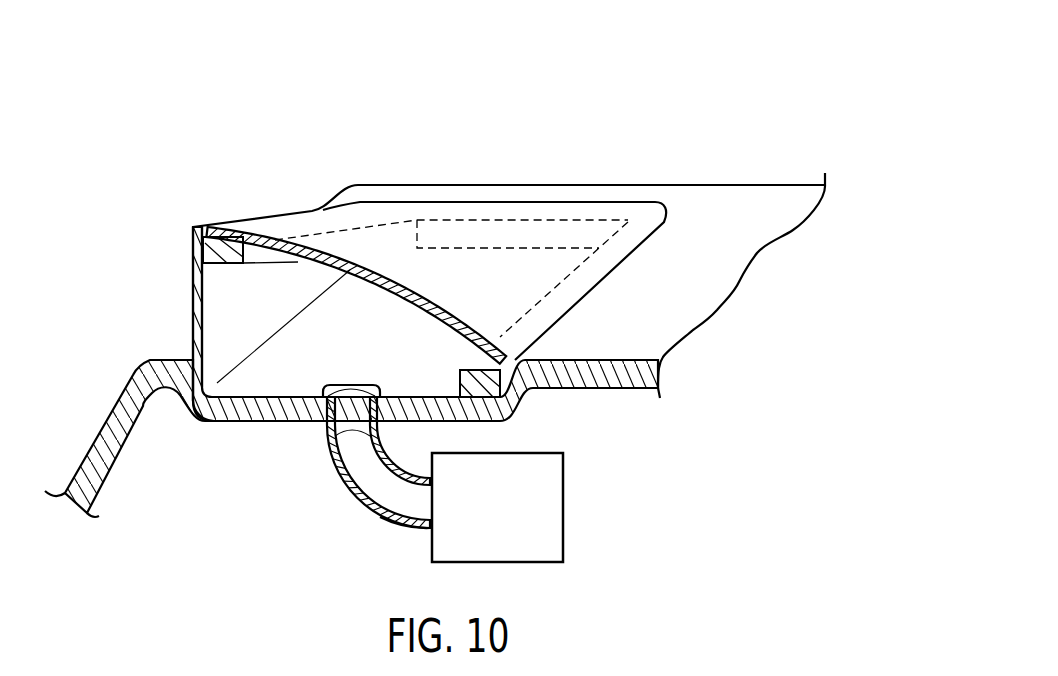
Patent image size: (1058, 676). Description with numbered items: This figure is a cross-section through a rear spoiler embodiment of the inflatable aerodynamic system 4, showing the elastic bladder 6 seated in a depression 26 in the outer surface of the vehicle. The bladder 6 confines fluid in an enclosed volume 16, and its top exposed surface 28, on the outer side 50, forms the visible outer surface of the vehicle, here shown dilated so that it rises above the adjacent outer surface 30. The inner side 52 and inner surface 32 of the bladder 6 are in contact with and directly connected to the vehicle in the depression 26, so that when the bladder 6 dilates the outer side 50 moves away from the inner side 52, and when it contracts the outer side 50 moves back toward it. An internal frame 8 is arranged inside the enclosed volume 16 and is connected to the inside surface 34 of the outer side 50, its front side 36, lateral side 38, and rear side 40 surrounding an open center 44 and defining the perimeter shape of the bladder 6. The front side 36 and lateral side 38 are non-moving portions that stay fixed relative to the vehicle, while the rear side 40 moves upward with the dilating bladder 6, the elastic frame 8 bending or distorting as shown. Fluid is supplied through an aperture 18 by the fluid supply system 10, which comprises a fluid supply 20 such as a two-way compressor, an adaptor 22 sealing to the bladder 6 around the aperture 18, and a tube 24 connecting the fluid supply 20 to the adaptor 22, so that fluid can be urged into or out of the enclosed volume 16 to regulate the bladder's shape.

The inflatable aerodynamic system 4 is at (104, 212).
The elastic bladder 6 is at (345, 196).
The internal frame 8 is at (289, 266).
The fluid supply system 10 is at (306, 549).
The enclosed volume 16 is at (364, 331).
The aperture 18 is at (338, 400).
The fluid supply 20 is at (509, 522).
The adaptor 22 is at (333, 434).
The tube 24 is at (379, 517).
The depression 26 is at (298, 392).
The exposed surface 28 is at (547, 272).
The adjacent outer surface 30 is at (714, 208).
The inner surface 32 is at (230, 420).
The inside surface 34 is at (263, 357).
The front side 36 is at (482, 366).
The lateral side 38 is at (545, 230).
The rear side 40 is at (226, 232).
The open center 44 is at (464, 265).
The outer side 50 is at (307, 237).
The inner side 52 is at (413, 421).